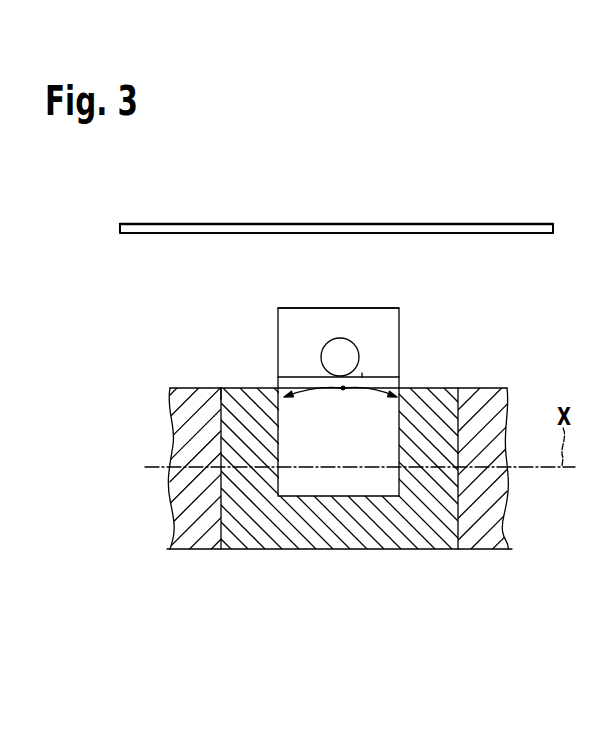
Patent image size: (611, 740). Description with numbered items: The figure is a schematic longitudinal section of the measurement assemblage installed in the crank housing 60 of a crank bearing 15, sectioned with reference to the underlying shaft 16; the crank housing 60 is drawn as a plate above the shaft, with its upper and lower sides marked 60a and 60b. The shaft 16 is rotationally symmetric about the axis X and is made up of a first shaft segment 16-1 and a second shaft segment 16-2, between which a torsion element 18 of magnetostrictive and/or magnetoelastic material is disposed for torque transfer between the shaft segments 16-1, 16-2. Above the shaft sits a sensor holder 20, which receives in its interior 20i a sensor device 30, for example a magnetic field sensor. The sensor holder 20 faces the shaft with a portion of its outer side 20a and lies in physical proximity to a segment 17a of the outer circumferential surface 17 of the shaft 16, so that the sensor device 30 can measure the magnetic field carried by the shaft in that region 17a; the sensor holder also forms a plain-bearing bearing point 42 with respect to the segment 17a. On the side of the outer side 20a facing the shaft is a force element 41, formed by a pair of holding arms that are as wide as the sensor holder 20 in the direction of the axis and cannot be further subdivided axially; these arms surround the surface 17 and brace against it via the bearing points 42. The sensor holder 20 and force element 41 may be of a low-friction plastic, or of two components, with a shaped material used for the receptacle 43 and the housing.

The crank bearing 15 is at (256, 215).
The shaft 16 is at (329, 508).
The first shaft segment 16-1 is at (198, 517).
The second shaft segment 16-2 is at (478, 517).
The outer circumferential surface 17 is at (220, 382).
The segment of outer circumferential surface 17a is at (343, 389).
The torsion element 18 is at (473, 627).
The sensor holder 20 is at (400, 318).
The outer side 20a is at (368, 299).
The interior 20i is at (300, 323).
The sensor device 30 is at (318, 358).
The force element 41 is at (152, 388).
The bearing point 42 is at (340, 500).
The receptacle 43 is at (366, 365).
The crank housing 60 is at (481, 224).
The upper side of cover plate 60a is at (143, 217).
The lower side of cover plate 60b is at (144, 240).